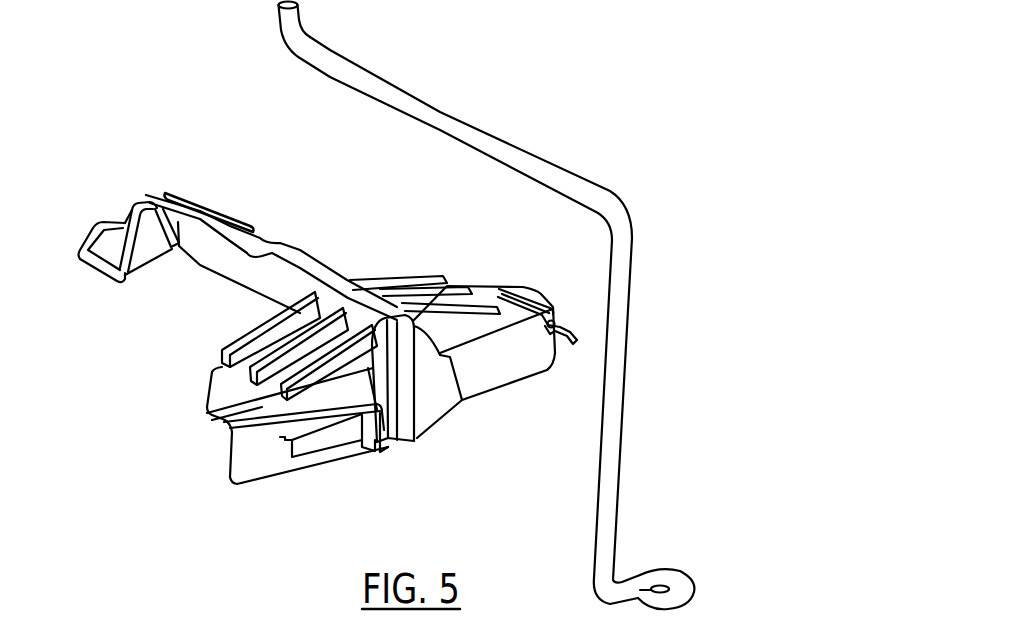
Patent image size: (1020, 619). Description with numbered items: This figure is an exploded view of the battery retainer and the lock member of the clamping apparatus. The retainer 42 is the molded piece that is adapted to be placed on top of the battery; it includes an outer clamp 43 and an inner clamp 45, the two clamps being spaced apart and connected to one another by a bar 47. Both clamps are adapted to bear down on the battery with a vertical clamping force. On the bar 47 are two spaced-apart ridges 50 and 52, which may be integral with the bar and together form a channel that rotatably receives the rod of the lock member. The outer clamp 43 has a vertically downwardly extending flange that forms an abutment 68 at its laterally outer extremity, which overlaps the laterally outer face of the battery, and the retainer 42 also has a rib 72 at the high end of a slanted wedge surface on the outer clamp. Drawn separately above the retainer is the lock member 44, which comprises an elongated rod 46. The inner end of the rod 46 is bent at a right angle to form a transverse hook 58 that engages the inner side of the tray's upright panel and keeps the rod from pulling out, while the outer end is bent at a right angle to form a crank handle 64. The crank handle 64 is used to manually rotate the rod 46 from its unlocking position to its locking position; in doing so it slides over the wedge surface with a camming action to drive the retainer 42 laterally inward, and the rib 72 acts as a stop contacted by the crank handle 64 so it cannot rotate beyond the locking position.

The retainer 42 is at (108, 234).
The outer clamp 43 is at (215, 390).
The lock member 44 is at (439, 306).
The inner clamp 45 is at (107, 262).
The rod 46 is at (417, 100).
The bar 47 is at (213, 263).
The ridge 50 is at (275, 266).
The ridge 52 is at (305, 250).
The hook 58 is at (283, 17).
The crank handle 64 is at (620, 406).
The abutment 68 is at (435, 398).
The rib 72 is at (402, 428).